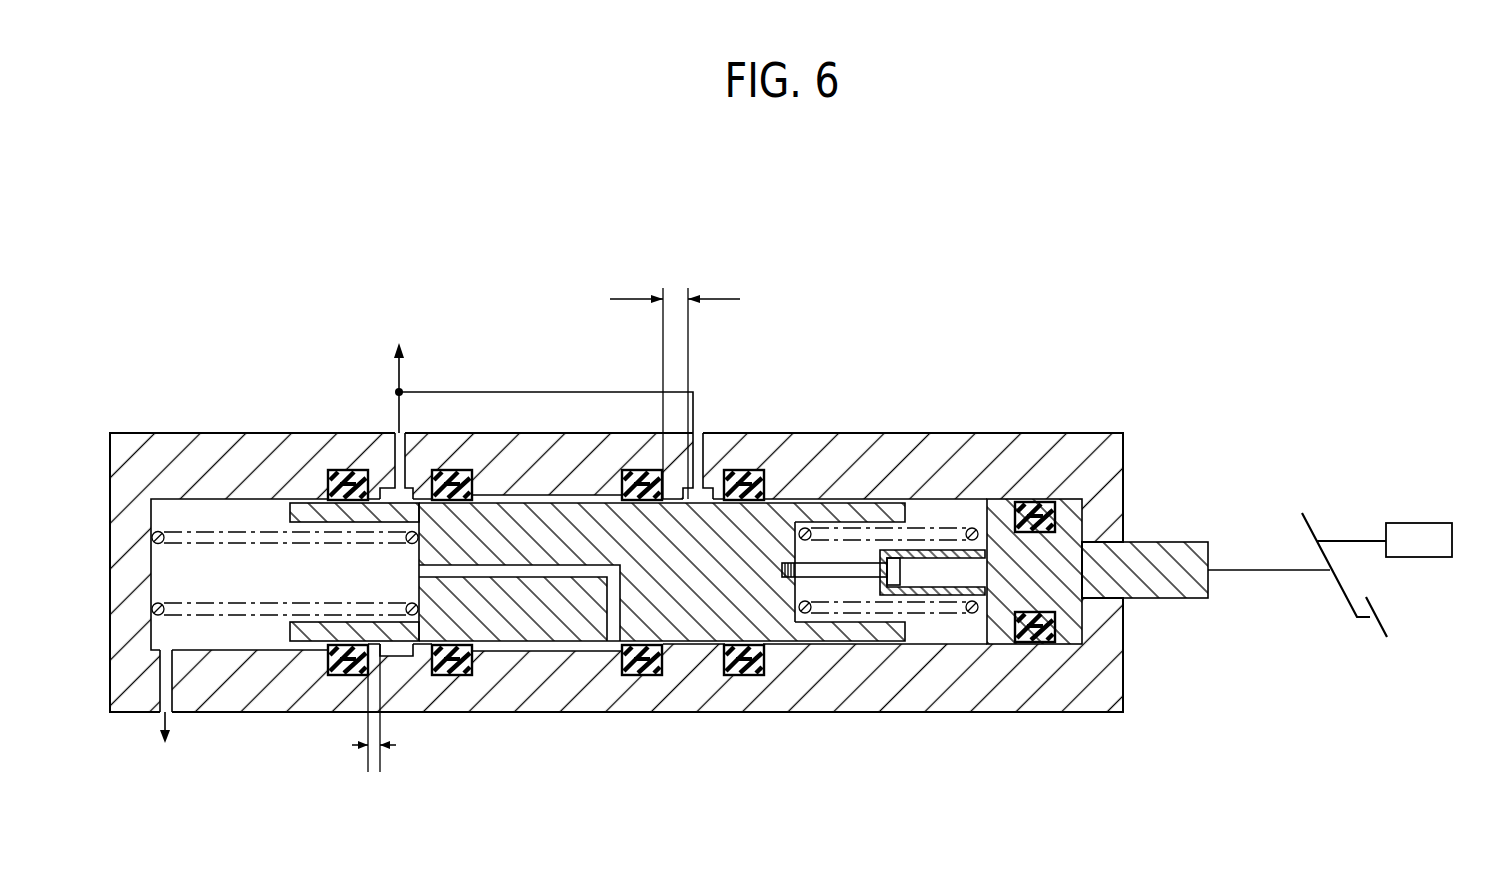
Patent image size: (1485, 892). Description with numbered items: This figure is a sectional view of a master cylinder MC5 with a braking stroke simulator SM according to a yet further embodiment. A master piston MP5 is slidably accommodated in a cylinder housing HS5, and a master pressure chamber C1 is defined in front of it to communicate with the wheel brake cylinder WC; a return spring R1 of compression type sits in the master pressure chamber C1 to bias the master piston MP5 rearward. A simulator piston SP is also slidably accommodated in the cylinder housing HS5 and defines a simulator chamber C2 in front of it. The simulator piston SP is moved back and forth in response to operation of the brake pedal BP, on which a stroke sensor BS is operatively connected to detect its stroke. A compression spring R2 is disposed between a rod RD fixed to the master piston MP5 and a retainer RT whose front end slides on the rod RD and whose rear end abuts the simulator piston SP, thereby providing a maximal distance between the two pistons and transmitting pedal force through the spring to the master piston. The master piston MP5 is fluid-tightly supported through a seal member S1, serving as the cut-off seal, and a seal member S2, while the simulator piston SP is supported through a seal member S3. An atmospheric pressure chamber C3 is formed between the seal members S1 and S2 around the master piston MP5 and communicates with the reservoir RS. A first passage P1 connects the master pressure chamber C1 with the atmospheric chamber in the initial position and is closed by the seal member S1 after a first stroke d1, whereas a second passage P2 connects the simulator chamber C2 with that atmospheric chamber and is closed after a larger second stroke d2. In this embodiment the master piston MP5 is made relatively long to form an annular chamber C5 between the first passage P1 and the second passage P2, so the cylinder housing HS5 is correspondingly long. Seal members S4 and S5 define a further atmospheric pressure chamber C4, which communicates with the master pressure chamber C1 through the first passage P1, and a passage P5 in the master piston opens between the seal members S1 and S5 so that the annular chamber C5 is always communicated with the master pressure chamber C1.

The stroke simulator SM is at (1028, 402).
The cylinder housing HS5 is at (120, 450).
The master cylinder MC5 is at (199, 425).
The master pressure chamber C1 is at (228, 630).
The wheel brake cylinder WC is at (160, 714).
The return spring R1 is at (238, 530).
The atmospheric pressure chamber C4 is at (398, 488).
The atmospheric pressure chamber C3 is at (703, 490).
The reservoir RS is at (537, 372).
The second stroke d2 is at (675, 377).
The first stroke d1 is at (374, 723).
The first passage P1 is at (398, 652).
The master piston MP5 is at (683, 600).
The second passage P2 is at (780, 527).
The simulator chamber C2 is at (945, 627).
The passage P5 is at (470, 565).
The annular chamber C5 is at (600, 577).
The seal member S4 is at (340, 665).
The seal member S5 is at (447, 672).
The seal member S1 is at (636, 672).
The seal member S2 is at (742, 672).
The compression spring R2 is at (868, 535).
The rod RD is at (850, 577).
The retainer RT is at (889, 550).
The seal member S3 is at (1040, 644).
The simulator piston SP is at (1198, 600).
The brake pedal BP is at (1388, 631).
The stroke sensor BS is at (1401, 523).